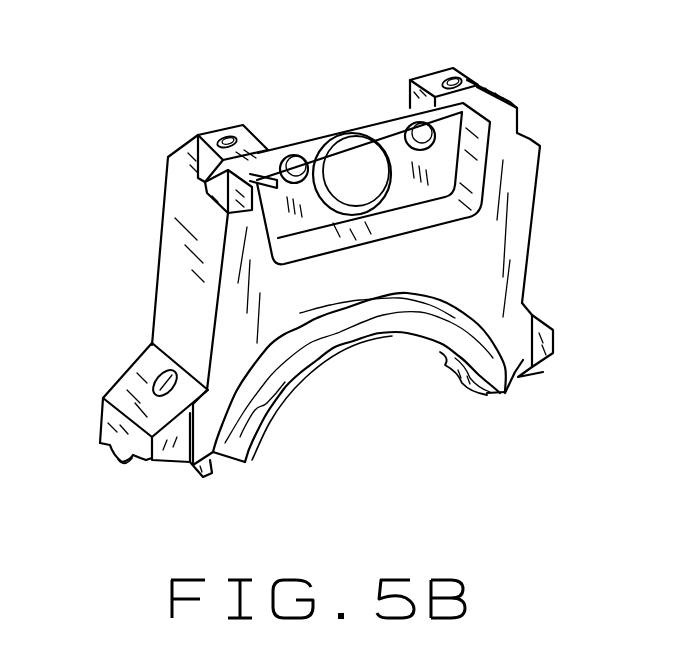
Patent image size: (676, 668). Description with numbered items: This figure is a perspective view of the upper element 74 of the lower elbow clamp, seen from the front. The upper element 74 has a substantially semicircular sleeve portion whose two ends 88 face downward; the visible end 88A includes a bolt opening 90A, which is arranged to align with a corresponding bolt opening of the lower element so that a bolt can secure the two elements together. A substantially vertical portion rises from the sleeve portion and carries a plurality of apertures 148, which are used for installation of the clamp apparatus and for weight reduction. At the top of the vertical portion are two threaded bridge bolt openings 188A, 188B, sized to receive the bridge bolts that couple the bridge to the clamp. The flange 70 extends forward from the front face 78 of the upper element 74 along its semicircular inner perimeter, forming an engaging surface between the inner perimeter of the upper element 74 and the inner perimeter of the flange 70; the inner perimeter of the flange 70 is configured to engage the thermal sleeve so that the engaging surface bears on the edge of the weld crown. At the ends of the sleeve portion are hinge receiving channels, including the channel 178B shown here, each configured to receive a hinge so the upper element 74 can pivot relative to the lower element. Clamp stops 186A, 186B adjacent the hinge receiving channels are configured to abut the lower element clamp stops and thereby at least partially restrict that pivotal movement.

The upper element 74 is at (317, 58).
The apertures 148 is at (407, 133).
The bridge bolt opening 188A is at (226, 137).
The bridge bolt opening 188B is at (455, 78).
The bolt opening 90A is at (160, 372).
The front face 78 is at (302, 296).
The flange 70 is at (305, 393).
The upper element ends 88 is at (543, 373).
The upper element end 88A is at (210, 465).
The clamp stop 186A is at (128, 462).
The clamp stop 186B is at (485, 392).
The hinge receiving channel 178B is at (105, 447).